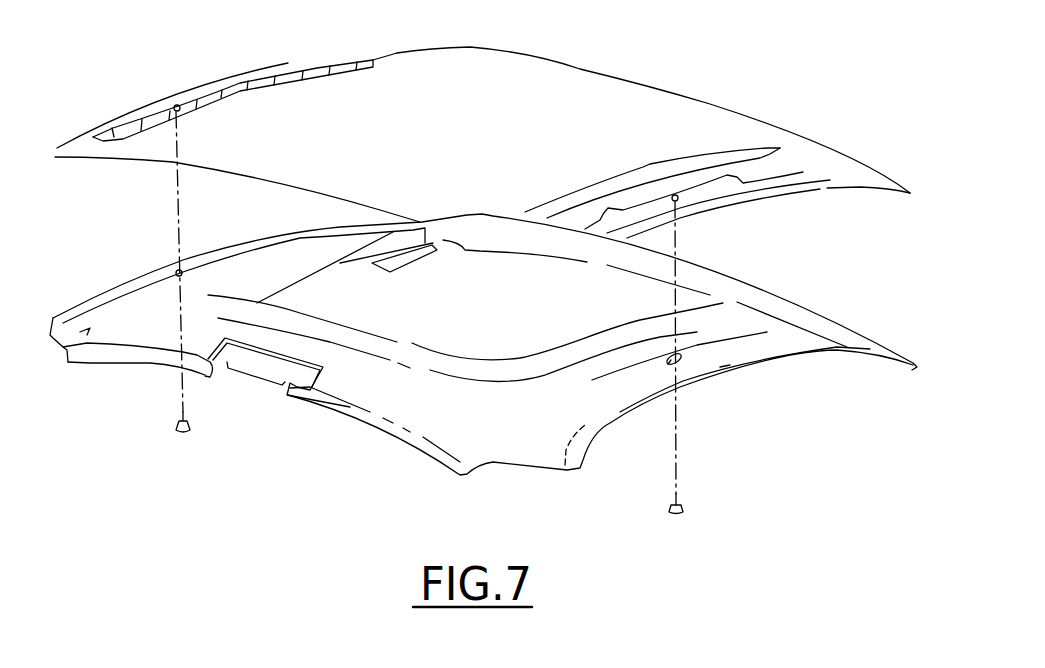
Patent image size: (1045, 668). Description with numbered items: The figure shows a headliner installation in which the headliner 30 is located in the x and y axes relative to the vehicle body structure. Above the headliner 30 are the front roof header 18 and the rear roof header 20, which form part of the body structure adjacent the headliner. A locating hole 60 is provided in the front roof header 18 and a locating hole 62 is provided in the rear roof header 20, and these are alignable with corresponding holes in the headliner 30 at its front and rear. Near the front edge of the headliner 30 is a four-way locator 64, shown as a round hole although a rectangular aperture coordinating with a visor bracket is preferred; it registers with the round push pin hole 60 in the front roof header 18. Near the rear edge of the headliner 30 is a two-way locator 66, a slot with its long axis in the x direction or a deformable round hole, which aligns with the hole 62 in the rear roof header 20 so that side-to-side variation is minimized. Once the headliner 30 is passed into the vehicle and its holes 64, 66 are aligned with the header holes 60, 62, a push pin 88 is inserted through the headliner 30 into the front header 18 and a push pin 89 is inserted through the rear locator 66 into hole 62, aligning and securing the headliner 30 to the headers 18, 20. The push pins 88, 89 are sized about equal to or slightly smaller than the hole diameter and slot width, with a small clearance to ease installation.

The front roof header 18 is at (273, 77).
The rear roof header 20 is at (688, 172).
The headliner 30 is at (543, 310).
The locating hole 60 is at (179, 112).
The locating hole 62 is at (678, 202).
The four-way locator 64 is at (183, 277).
The two-way locator 66 is at (668, 362).
The push pin 88 is at (190, 421).
The push pin 89 is at (672, 508).